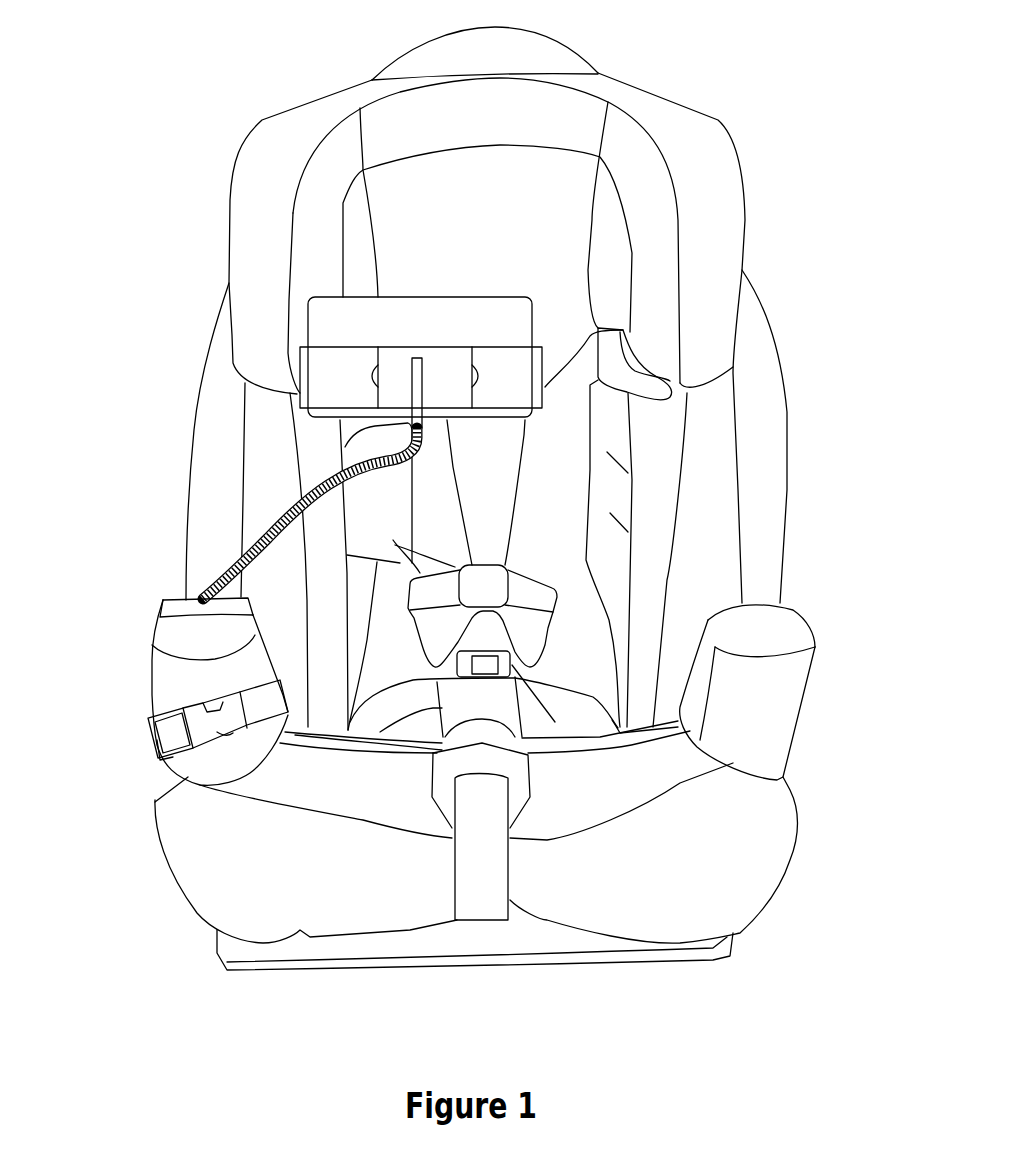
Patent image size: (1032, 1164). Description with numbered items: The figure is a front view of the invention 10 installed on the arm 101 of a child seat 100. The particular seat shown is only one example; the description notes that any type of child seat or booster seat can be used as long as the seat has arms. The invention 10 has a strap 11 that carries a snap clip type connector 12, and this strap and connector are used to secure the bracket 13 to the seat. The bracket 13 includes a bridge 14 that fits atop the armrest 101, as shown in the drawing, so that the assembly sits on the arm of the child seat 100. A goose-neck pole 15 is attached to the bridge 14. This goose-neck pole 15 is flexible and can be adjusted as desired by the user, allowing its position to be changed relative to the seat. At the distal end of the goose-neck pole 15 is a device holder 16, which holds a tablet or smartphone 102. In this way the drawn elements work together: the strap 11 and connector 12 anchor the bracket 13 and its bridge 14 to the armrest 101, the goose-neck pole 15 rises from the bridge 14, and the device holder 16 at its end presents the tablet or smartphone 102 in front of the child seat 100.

The child seat 100 is at (262, 252).
The arm 101 is at (182, 664).
The tablet or smartphone 102 is at (417, 317).
The invention 10 is at (339, 423).
The strap 11 is at (150, 747).
The snap clip type connector 12 is at (220, 722).
The bracket 13 is at (260, 628).
The bridge 14 is at (175, 600).
The goose-neck pole 15 is at (292, 523).
The device holder 16 is at (560, 332).